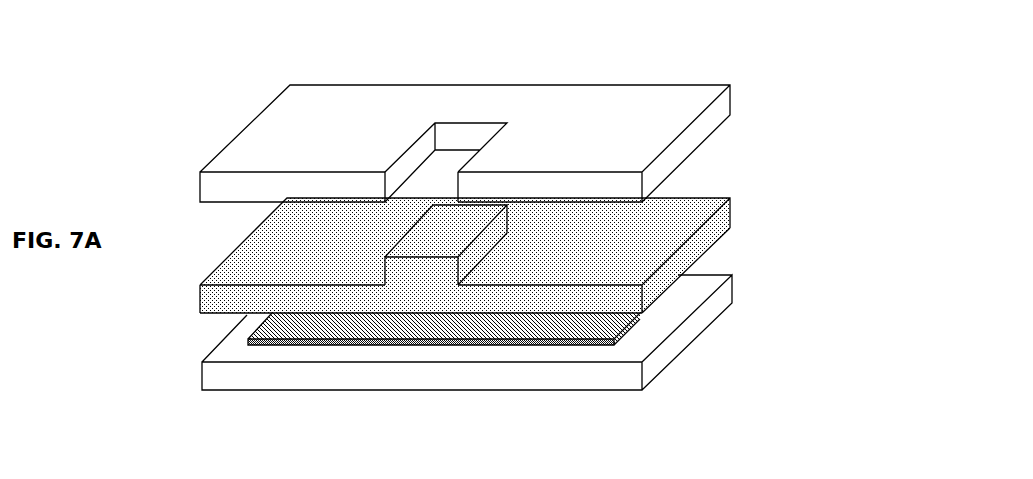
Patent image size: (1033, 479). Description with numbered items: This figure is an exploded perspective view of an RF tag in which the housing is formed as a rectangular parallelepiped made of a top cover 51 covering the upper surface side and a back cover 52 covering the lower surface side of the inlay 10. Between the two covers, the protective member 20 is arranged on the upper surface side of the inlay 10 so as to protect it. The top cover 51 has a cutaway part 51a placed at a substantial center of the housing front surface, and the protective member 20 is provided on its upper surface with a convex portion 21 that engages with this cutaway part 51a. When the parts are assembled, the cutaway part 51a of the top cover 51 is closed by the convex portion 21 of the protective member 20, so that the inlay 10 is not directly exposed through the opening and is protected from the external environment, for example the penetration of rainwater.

The top cover 51 is at (465, 110).
The cutaway part 51a is at (463, 138).
The protective member 20 is at (506, 304).
The convex portion 21 is at (422, 270).
The inlay 10 is at (633, 327).
The back cover 52 is at (677, 345).